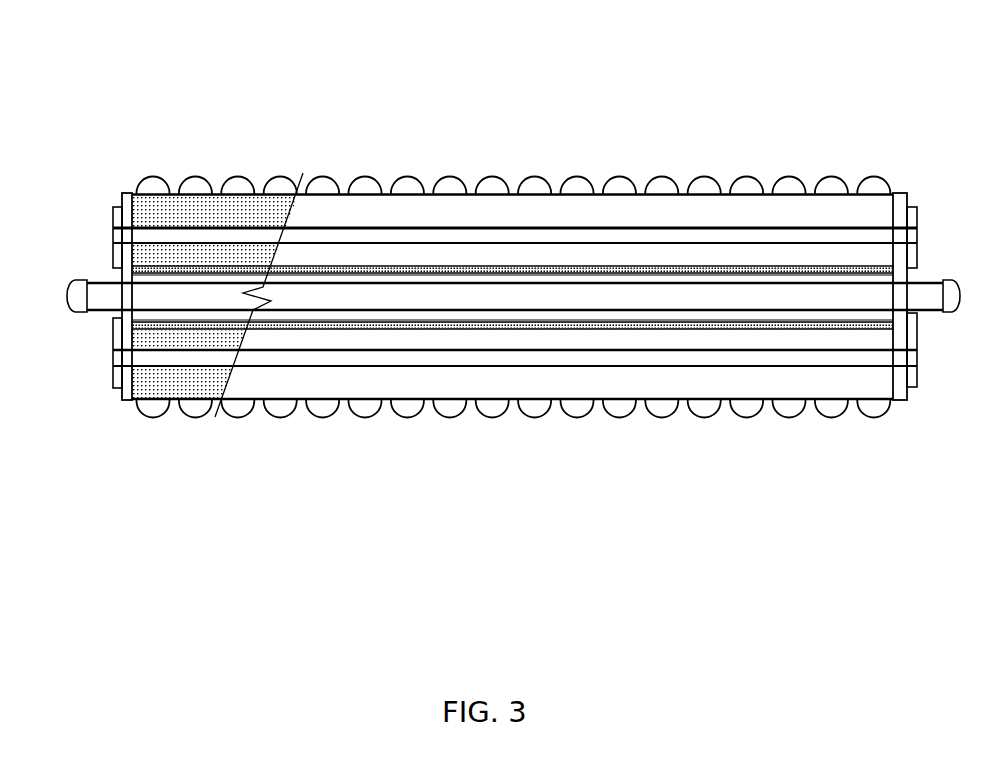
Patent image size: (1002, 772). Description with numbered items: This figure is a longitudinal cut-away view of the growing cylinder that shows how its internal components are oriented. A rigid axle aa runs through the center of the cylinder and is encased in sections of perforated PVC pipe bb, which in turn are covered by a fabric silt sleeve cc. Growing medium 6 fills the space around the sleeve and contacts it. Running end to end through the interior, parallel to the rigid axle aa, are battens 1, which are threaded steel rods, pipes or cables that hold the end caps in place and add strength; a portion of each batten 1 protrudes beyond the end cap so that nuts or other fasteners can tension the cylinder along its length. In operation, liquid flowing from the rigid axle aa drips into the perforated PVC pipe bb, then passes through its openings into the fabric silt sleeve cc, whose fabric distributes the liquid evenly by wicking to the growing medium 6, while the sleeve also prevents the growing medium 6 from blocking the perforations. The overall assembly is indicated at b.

The battens 1 is at (115, 210).
The growing medium 6 is at (215, 197).
The assembly b is at (646, 86).
The rigid axle aa is at (77, 313).
The perforated PVC pipe bb is at (830, 266).
The fabric silt sleeve cc is at (780, 266).